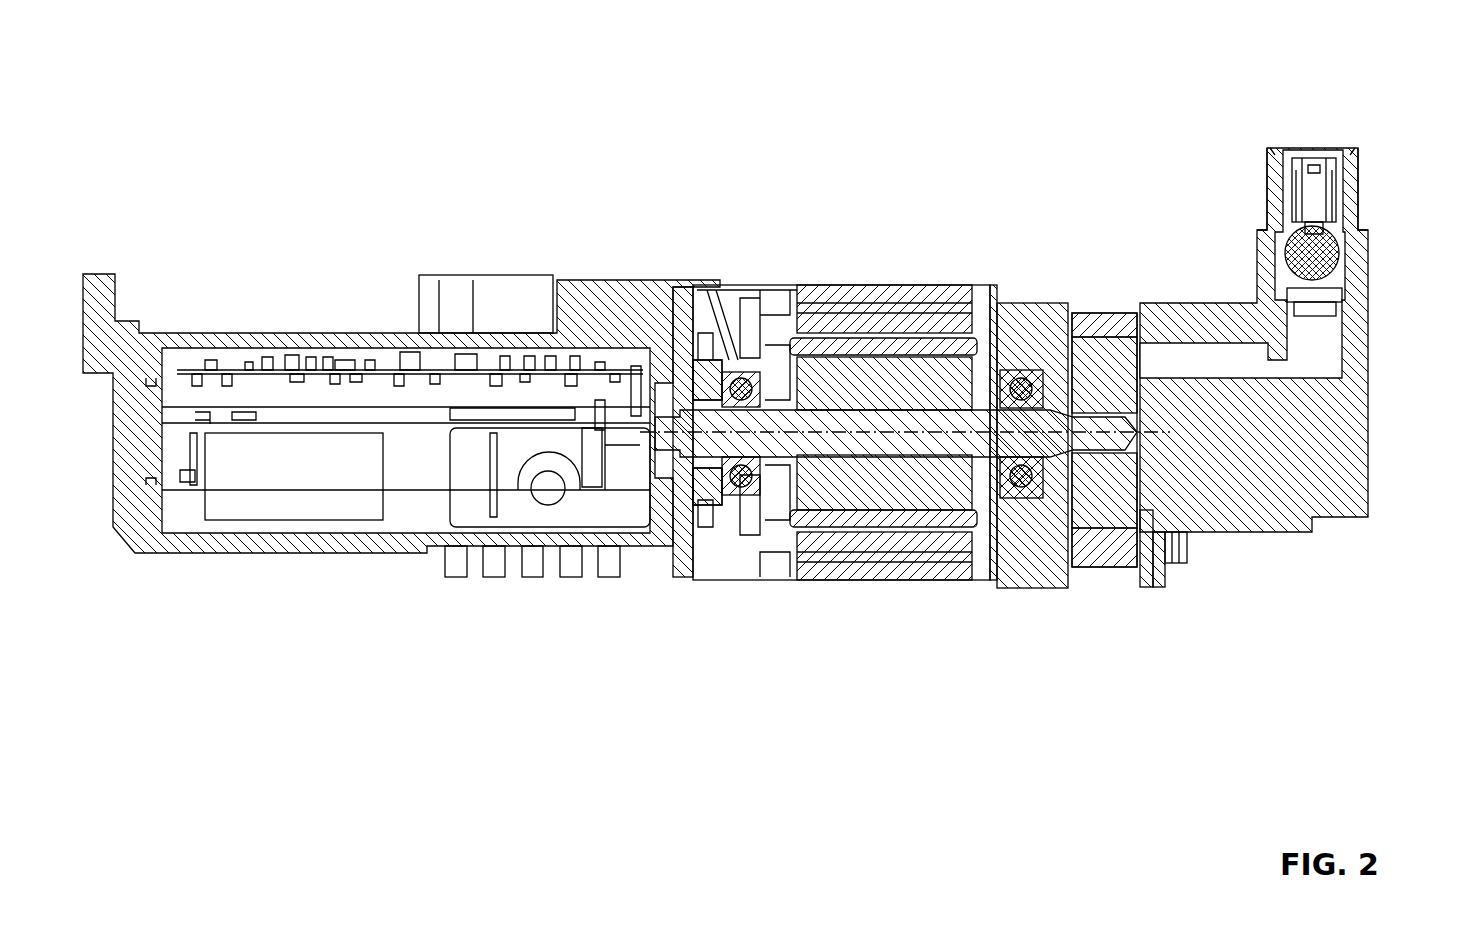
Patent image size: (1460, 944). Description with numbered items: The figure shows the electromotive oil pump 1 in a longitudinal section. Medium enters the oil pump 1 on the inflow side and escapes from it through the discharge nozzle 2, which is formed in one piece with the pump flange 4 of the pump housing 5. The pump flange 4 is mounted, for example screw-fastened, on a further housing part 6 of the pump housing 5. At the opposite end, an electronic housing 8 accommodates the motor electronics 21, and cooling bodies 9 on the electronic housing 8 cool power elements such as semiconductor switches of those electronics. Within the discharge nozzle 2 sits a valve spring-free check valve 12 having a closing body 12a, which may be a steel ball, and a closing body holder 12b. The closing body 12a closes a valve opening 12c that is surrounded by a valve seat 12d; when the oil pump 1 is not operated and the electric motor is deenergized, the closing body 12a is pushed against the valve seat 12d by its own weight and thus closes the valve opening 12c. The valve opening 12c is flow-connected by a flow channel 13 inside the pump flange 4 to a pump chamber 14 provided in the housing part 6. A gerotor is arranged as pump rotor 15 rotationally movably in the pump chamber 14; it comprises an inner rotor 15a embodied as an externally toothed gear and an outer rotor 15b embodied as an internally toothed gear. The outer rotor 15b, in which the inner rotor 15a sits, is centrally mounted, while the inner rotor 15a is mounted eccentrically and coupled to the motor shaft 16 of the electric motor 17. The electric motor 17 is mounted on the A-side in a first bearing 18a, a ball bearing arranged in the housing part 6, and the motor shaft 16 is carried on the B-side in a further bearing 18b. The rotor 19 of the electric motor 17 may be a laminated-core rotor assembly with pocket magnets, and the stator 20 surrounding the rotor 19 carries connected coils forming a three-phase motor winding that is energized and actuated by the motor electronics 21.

The oil pump 1 is at (255, 215).
The discharge nozzle 2 is at (1358, 188).
The pump flange 4 is at (1162, 538).
The pump housing 5 is at (1275, 391).
The housing part 6 is at (1007, 587).
The electronic housing 8 is at (268, 545).
The cooling bodies 9 is at (462, 573).
The check valve 12 is at (1306, 209).
The closing body 12a is at (1312, 253).
The closing body holder 12b is at (1283, 227).
The valve opening 12c is at (1310, 307).
The valve seat 12d is at (1348, 293).
The flow channel 13 is at (1235, 358).
The pump chamber 14 is at (1148, 545).
The pump rotor 15 is at (1079, 419).
The inner rotor 15a is at (1093, 363).
The outer rotor 15b is at (1105, 545).
The motor shaft 16 is at (917, 422).
The electric motor 17 is at (833, 553).
The first bearing 18a is at (1021, 480).
The further bearing 18b is at (741, 480).
The rotor 19 is at (831, 385).
The stator 20 is at (862, 572).
The motor electronics 21 is at (335, 355).